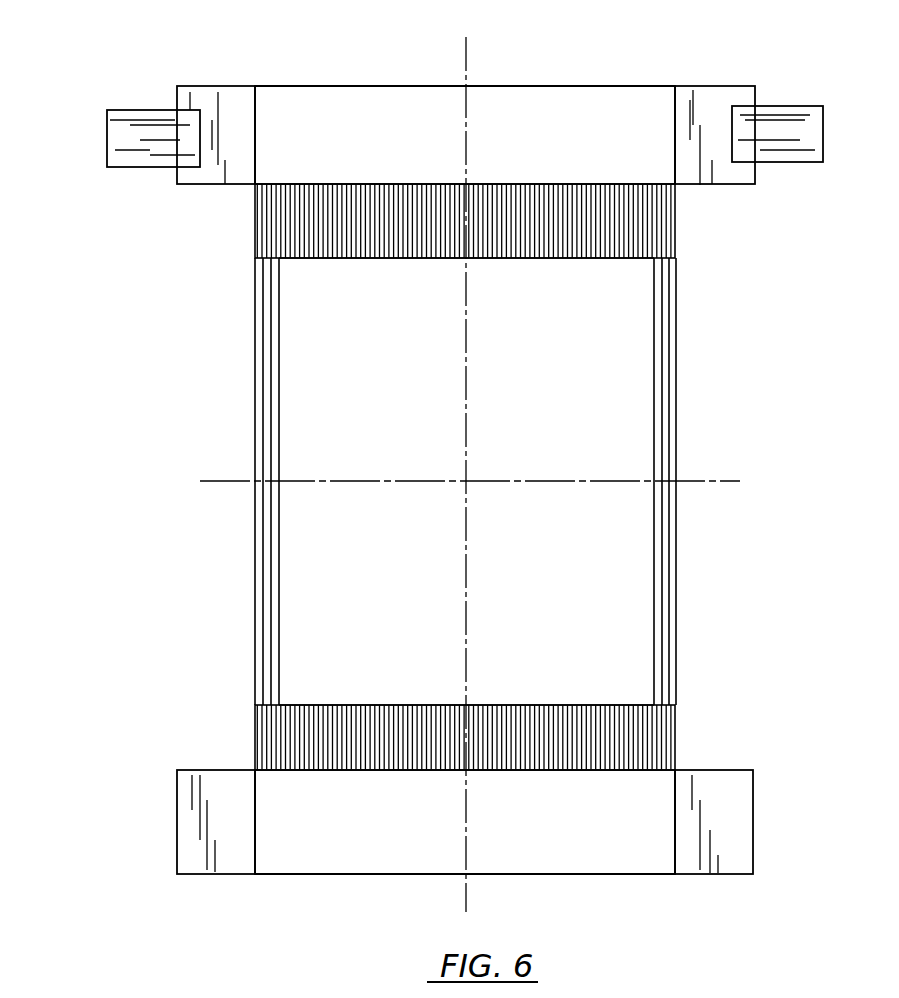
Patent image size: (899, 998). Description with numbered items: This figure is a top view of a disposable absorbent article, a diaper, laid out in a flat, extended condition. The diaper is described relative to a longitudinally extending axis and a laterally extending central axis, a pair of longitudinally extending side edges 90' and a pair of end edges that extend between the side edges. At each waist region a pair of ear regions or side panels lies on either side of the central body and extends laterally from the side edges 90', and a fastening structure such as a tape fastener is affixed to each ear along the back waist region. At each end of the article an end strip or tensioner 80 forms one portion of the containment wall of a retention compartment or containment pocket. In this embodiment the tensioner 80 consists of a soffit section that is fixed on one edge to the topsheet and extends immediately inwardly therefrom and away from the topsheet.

The tensioner 80 is at (465, 111).
The side edge 90' is at (237, 481).